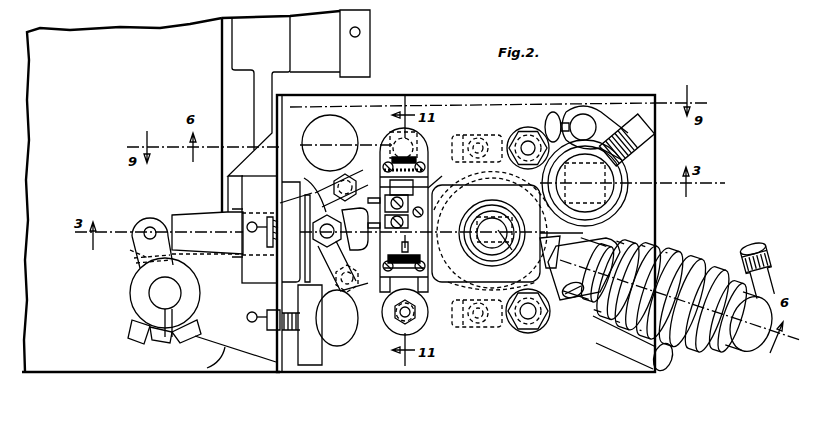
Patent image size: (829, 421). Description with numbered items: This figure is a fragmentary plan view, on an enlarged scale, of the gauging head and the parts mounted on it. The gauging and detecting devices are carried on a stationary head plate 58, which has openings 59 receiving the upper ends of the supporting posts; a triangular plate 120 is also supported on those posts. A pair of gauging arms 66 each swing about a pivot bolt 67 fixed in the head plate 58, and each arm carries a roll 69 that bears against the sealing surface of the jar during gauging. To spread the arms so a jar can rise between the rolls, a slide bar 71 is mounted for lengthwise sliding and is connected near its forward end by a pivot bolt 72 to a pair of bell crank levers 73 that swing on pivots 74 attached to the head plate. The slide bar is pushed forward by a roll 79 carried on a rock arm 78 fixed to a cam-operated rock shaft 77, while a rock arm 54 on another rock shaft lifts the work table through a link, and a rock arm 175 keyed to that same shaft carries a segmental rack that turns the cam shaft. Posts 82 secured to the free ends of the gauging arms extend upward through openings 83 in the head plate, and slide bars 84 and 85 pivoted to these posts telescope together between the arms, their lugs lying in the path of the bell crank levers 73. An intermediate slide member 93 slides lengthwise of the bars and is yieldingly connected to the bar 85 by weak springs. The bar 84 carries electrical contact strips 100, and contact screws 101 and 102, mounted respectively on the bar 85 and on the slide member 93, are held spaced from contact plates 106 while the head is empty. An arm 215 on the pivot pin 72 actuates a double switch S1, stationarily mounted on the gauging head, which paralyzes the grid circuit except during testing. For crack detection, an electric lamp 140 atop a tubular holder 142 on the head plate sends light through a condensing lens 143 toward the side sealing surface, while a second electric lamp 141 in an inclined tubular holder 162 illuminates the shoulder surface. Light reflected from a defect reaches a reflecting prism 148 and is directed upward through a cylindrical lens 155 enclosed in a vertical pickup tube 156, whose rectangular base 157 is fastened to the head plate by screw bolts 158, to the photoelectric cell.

The rock arm 175 is at (368, 57).
The rock arm 54 is at (263, 88).
The head plate 58 is at (473, 103).
The openings 59 is at (332, 118).
The arm 215 is at (280, 198).
The double switch S1 is at (287, 270).
The slide bar 71 is at (198, 217).
The roll 79 is at (158, 196).
The rock arm 78 is at (143, 258).
The rock shaft 77 is at (173, 292).
The triangular plate 120 is at (253, 342).
The pivots 74 is at (343, 175).
The bell crank levers 73 is at (367, 186).
The pivot bolt 72 is at (303, 189).
The slide bar 84 is at (403, 285).
The slide bar 85 is at (390, 138).
The electrical contact screw 101 is at (432, 148).
The contact plates 106 is at (446, 174).
The electrical contact strips 100 is at (410, 213).
The electrical contact screw 102 is at (408, 242).
The cylindrical lens 155 is at (465, 268).
The pickup tube 156 is at (497, 211).
The screw bolts 158 is at (478, 213).
The intermediate slide member 93 is at (452, 287).
The gauging arms 66 is at (455, 135).
The roll 69 is at (492, 137).
The openings 83 is at (530, 127).
The pivot bolt 67 is at (530, 326).
The electric lamp 140 is at (610, 188).
The tubular holder 142 is at (658, 205).
The condensing lens 143 is at (627, 167).
The inclined tubular holder 162 is at (703, 270).
The electric lamp 141 is at (748, 343).
The reflecting prism 148 is at (606, 250).
The rectangular base 157 is at (592, 231).
The posts 82 is at (403, 322).